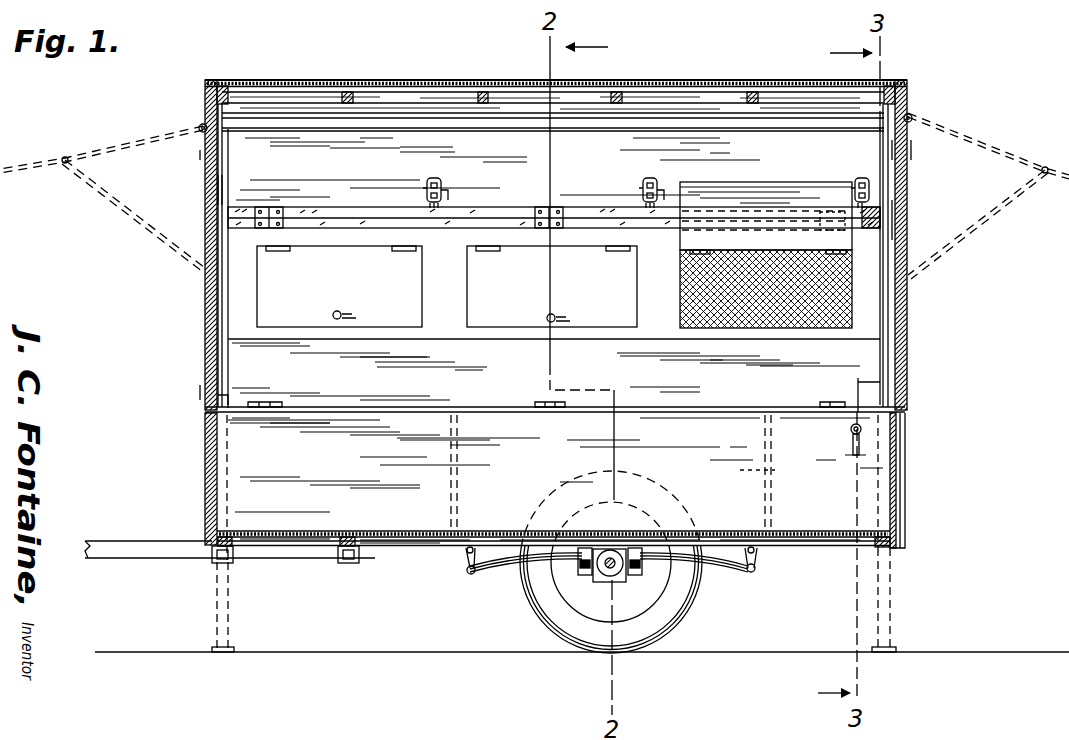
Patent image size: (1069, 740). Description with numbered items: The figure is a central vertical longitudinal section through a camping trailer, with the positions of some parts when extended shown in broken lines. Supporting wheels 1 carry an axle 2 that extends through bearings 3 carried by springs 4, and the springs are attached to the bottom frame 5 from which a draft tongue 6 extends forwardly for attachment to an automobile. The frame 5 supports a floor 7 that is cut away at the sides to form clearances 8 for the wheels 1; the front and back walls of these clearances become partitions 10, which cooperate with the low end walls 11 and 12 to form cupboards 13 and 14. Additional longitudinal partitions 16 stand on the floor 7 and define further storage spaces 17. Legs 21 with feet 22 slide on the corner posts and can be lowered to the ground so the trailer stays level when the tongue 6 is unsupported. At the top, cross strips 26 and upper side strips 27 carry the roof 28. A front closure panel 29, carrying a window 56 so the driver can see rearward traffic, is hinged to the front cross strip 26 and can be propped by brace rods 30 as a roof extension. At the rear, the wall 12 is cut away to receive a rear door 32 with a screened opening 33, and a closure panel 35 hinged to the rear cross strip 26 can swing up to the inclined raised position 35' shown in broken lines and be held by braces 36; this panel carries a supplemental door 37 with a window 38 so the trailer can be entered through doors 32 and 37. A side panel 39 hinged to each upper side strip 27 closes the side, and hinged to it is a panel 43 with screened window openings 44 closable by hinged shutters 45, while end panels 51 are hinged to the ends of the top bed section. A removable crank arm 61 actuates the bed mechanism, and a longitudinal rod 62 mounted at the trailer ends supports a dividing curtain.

The supporting wheels 1 is at (676, 613).
The axle 2 is at (605, 579).
The bearings 3 is at (621, 576).
The springs 4 is at (493, 576).
The bottom frame 5 is at (325, 547).
The draft tongue 6 is at (157, 559).
The floor 7 is at (306, 531).
The clearances 8 is at (746, 481).
The partitions 10 is at (458, 491).
The low end wall 11 is at (202, 491).
The low end wall 12 is at (906, 491).
The cupboard 13 is at (437, 436).
The cupboard 14 is at (797, 440).
The longitudinal partitions 16 is at (669, 430).
The storage spaces 17 is at (304, 448).
The legs 21 is at (230, 629).
The feet 22 is at (225, 653).
The cross strips 26 is at (205, 103).
The upper side strips 27 is at (318, 123).
The roof 28 is at (723, 88).
The front closure panel 29 is at (202, 358).
The brace rods 30 is at (124, 208).
The rear door 32 is at (916, 351).
The screened opening 33 is at (882, 368).
The closure panel 35 is at (920, 480).
The brace 35' is at (534, 171).
The braces 36 is at (972, 231).
The supplemental door 37 is at (908, 150).
The window 38 is at (908, 225).
The side panel 39 is at (646, 184).
The panel 43 is at (422, 318).
The screened window openings 44 is at (679, 298).
The hinged shutters 45 is at (770, 173).
The end panels 51 is at (228, 187).
The window 56 is at (211, 212).
The crank arm 61 is at (853, 448).
The longitudinal rod 62 is at (657, 114).